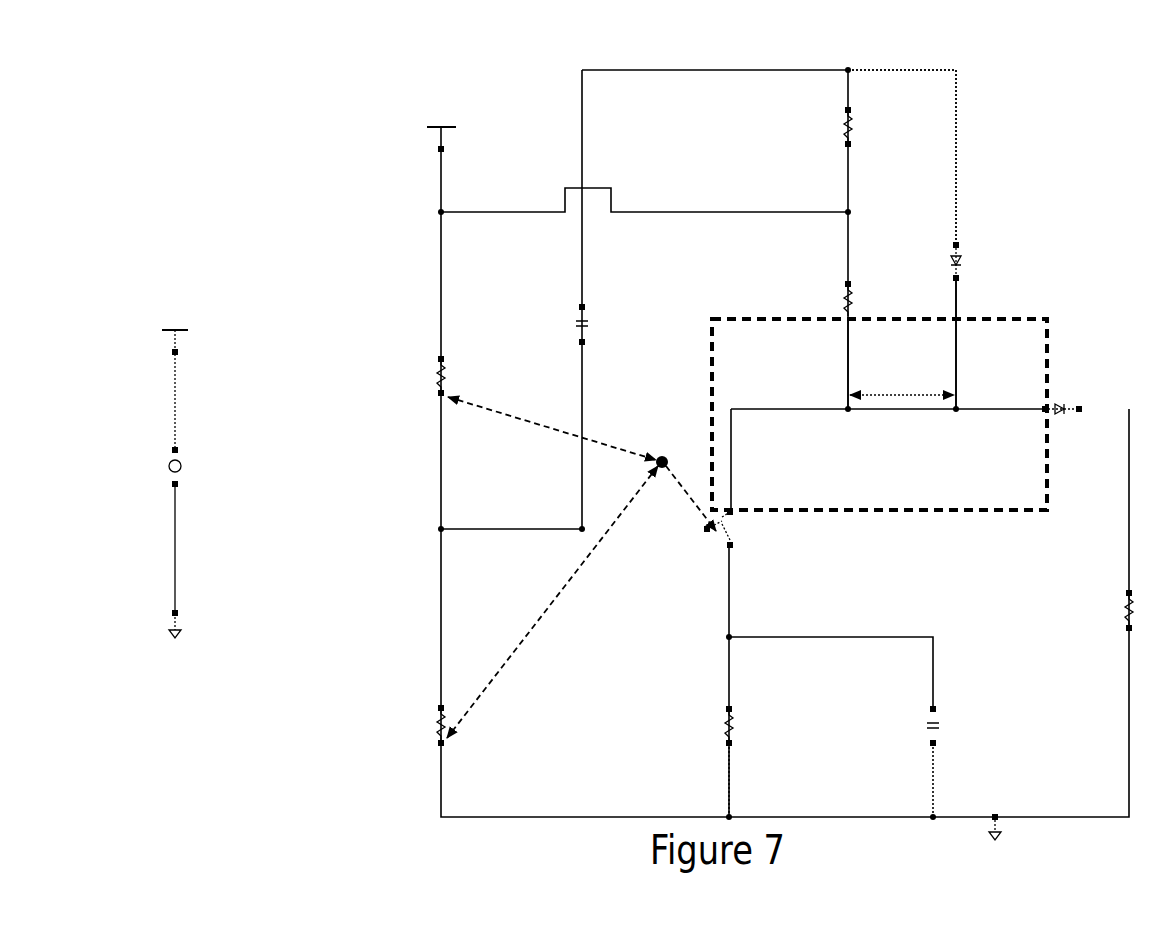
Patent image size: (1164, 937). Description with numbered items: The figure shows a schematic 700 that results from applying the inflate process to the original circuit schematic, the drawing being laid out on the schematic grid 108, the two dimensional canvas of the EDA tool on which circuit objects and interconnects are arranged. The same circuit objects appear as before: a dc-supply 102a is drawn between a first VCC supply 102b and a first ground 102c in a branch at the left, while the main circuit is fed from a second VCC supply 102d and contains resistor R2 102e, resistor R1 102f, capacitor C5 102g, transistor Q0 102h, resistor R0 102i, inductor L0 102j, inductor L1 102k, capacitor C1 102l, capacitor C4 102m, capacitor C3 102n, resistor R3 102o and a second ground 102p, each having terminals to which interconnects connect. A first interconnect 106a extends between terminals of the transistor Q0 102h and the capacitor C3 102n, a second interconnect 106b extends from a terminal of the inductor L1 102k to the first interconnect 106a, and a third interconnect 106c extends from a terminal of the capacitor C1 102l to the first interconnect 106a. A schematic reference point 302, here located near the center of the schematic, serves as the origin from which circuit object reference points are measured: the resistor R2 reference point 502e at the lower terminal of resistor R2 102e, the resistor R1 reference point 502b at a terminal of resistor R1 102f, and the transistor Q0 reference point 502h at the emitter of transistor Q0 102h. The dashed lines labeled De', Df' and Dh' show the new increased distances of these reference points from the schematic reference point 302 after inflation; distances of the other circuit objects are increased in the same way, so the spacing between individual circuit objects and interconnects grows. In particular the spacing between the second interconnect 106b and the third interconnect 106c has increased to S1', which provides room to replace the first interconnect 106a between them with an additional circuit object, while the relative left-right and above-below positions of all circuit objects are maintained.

The dc-supply 102a is at (216, 453).
The first VCC supply 102b is at (200, 345).
The first ground 102c is at (202, 631).
The second VCC supply 102d is at (424, 146).
The resistor R2 102e is at (430, 377).
The resistor R1 102f is at (424, 729).
The capacitor C5 102g is at (608, 340).
The transistor Q0 102h is at (720, 543).
The resistor R0 102i is at (718, 728).
The inductor L0 102j is at (840, 121).
The inductor L1 102k is at (837, 299).
The capacitor C1 102l is at (983, 270).
The capacitor C4 102m is at (920, 717).
The capacitor C3 102n is at (1070, 397).
The resistor R3 102o is at (1112, 605).
The second ground 102p is at (1018, 833).
The first interconnect 106a is at (920, 414).
The second interconnect 106b is at (845, 390).
The third interconnect 106c is at (954, 380).
The schematic grid 108 is at (1106, 145).
The schematic reference point 302 is at (666, 452).
The resistor R1 reference point 502b is at (445, 746).
The resistor R2 reference point 502e is at (438, 400).
The transistor Q0 reference point 502h is at (736, 541).
The schematic 700 is at (982, 86).
The increased spacing S1' is at (902, 383).
The increased distance De' is at (552, 428).
The increased distance Df' is at (552, 602).
The increased distance Dh' is at (689, 498).